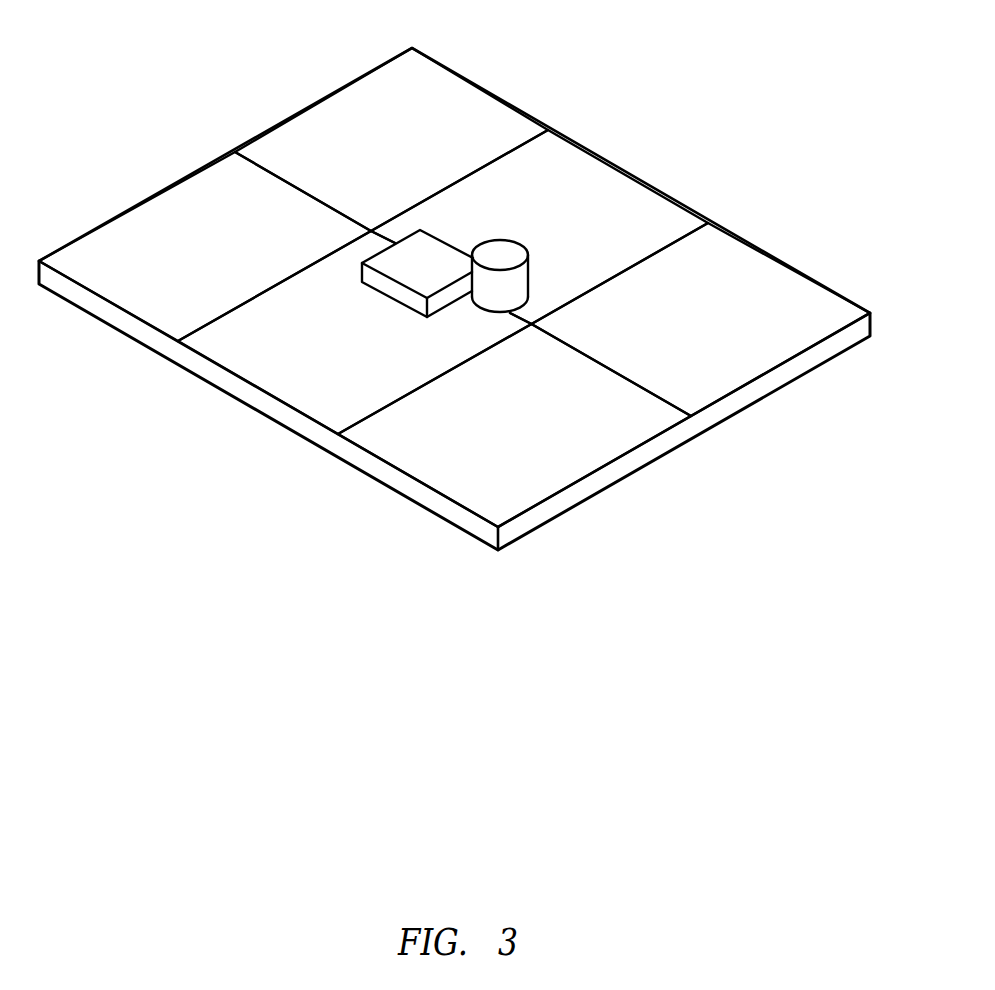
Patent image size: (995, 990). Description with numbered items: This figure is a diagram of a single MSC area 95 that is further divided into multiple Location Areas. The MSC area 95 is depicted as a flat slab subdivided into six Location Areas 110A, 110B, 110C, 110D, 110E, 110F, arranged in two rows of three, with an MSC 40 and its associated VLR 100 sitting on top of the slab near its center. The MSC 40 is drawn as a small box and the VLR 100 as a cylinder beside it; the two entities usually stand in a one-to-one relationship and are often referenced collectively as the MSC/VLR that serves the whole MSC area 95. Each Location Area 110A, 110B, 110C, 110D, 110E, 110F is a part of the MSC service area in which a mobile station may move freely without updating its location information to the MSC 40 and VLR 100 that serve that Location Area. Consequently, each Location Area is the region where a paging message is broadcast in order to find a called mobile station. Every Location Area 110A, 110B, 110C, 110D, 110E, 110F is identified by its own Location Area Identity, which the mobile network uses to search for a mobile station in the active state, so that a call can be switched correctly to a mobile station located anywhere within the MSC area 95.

The MSC area 95 is at (518, 525).
The Location Area 110A is at (460, 107).
The Location Area 110B is at (608, 193).
The Location Area 110C is at (793, 313).
The Location Area 110D is at (437, 475).
The Location Area 110E is at (263, 372).
The Location Area 110F is at (115, 285).
The MSC 40 is at (450, 255).
The VLR 100 is at (507, 257).